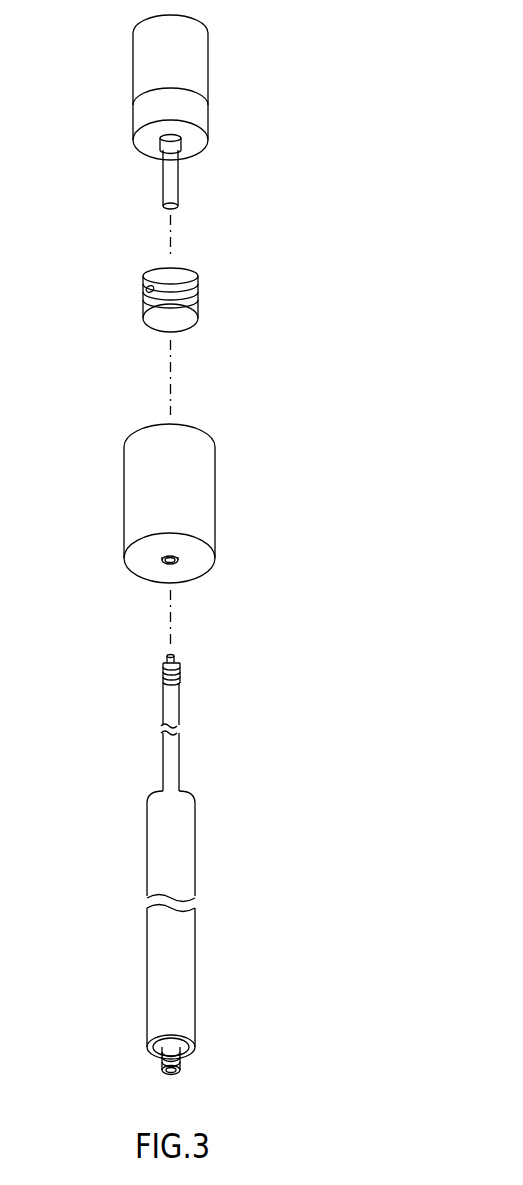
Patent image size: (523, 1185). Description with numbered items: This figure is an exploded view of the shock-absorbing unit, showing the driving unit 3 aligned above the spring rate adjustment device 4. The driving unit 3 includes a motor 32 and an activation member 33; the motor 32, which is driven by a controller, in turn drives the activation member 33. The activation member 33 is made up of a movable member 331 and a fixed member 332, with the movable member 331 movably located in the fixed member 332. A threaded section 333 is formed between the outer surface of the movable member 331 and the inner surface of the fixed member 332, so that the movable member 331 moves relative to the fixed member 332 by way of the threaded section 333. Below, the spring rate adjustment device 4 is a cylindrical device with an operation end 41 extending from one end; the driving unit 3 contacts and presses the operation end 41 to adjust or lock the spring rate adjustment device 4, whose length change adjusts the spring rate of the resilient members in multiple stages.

The driving unit 3 is at (110, 233).
The motor 32 is at (188, 62).
The activation member 33 is at (325, 450).
The movable member 331 is at (180, 325).
The fixed member 332 is at (188, 453).
The threaded section 333 is at (198, 289).
The spring rate adjustment device 4 is at (135, 858).
The operation end 41 is at (175, 657).